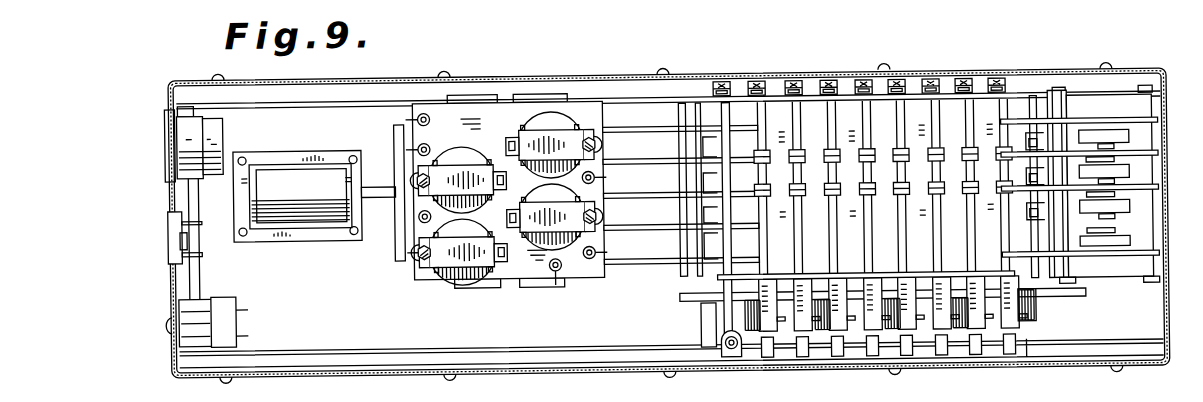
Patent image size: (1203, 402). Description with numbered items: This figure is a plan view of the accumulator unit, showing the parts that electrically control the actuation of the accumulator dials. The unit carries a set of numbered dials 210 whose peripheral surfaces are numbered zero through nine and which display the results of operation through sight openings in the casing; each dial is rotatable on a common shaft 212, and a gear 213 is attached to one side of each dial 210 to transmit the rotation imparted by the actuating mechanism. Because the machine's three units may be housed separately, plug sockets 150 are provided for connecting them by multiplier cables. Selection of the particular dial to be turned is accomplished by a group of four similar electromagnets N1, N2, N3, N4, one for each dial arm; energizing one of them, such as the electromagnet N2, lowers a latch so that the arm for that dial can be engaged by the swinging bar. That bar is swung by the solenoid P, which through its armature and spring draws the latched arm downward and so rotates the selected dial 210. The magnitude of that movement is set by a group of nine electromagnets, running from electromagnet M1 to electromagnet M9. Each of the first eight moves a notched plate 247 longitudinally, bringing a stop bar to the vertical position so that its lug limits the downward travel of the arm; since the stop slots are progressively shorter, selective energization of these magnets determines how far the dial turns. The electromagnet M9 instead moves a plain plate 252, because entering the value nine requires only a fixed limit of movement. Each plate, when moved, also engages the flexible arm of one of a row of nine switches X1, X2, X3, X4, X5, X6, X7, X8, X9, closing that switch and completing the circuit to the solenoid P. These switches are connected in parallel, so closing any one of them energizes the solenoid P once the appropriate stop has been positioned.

The plug sockets 150 is at (180, 131).
The solenoid P is at (297, 196).
The electromagnet N1 is at (553, 144).
The electromagnet N2 is at (458, 180).
The electromagnet N3 is at (554, 216).
The electromagnet N4 is at (459, 252).
The switch X1 is at (1003, 88).
The switch X2 is at (972, 88).
The switch X3 is at (939, 88).
The switch X4 is at (905, 88).
The switch X5 is at (869, 88).
The switch X6 is at (836, 88).
The switch X7 is at (801, 88).
The switch X8 is at (765, 88).
The switch X9 is at (720, 88).
The notched plate 247 is at (760, 185).
The plain plate 252 is at (723, 152).
The electromagnet M9 is at (697, 332).
The electromagnet M1 is at (1033, 325).
The numbered dials 210 is at (1095, 184).
The shaft 212 is at (1104, 120).
The gear 213 is at (1082, 141).